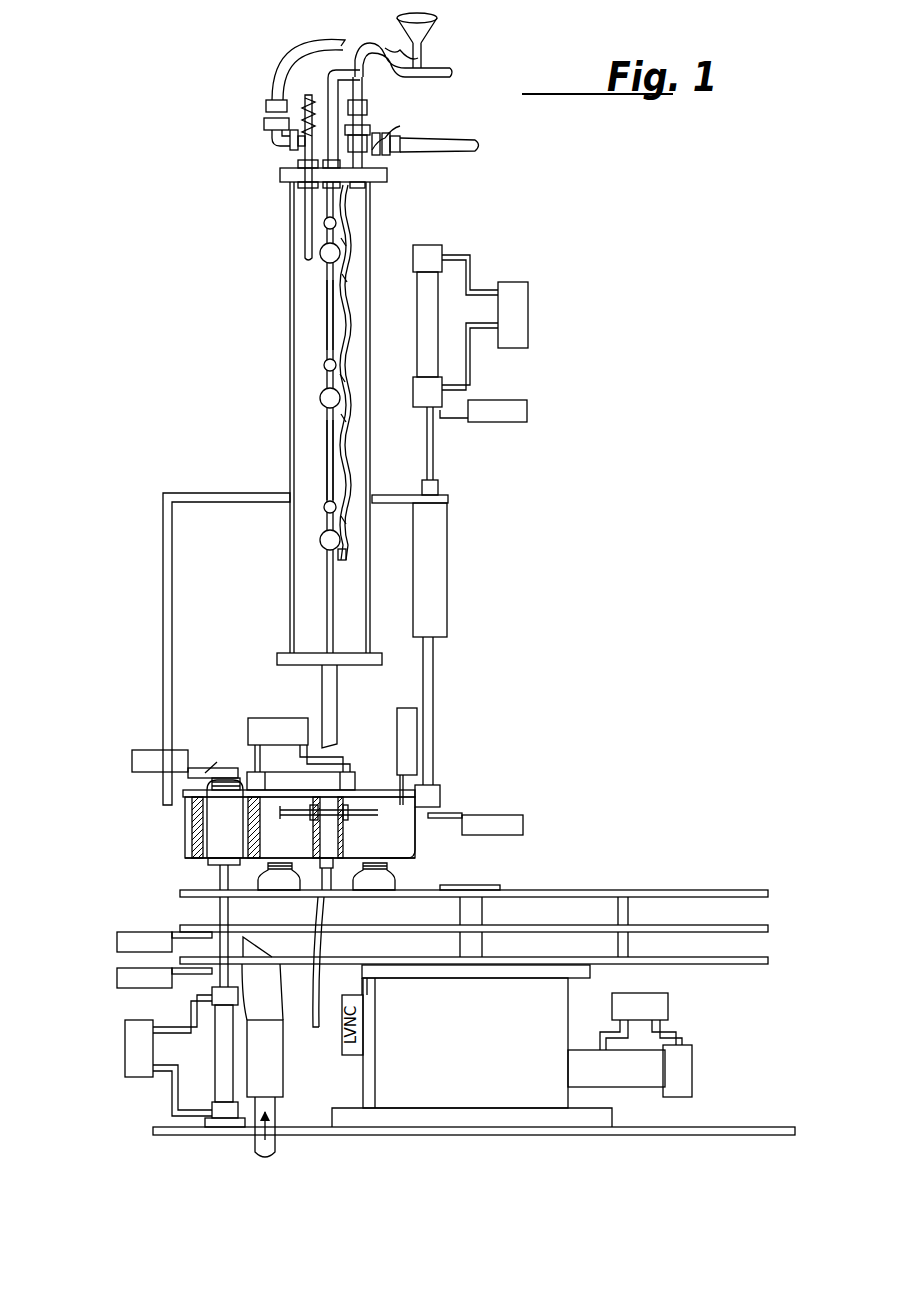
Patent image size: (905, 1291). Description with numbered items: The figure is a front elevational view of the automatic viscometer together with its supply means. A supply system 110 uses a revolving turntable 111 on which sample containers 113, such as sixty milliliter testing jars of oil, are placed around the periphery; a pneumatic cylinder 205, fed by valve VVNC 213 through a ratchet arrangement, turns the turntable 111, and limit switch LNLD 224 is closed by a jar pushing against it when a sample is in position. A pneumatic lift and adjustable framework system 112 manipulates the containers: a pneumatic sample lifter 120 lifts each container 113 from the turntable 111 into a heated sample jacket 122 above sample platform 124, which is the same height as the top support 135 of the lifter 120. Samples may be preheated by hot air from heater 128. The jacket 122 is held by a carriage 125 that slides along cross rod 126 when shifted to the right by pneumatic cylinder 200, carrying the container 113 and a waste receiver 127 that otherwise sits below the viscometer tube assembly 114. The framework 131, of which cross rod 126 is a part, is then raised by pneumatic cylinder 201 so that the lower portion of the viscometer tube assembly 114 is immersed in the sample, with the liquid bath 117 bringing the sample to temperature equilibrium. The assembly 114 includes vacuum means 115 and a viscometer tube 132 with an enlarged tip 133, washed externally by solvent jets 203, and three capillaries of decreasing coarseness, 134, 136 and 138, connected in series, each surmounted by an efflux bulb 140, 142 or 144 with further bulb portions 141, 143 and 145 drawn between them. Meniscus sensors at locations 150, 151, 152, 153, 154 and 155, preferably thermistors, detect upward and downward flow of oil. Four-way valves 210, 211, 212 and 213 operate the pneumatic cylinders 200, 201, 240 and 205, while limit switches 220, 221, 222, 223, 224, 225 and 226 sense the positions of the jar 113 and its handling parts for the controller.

The supply system 110 is at (471, 899).
The turntable 111 is at (655, 890).
The pneumatic lift and adjustable framework system 112 is at (435, 660).
The sample container 113 is at (218, 852).
The viscometer tube assembly 114 is at (280, 184).
The vacuum means 115 is at (455, 70).
The liquid bath means 117 is at (292, 352).
The pneumatic sample lifter 120 is at (442, 899).
The heated sample jacket 122 is at (198, 830).
The sample platform 124 is at (195, 812).
The carriage 125 is at (212, 805).
The cross rod 126 is at (375, 790).
The waste receiver 127 is at (417, 842).
The heater 128 is at (283, 1082).
The framework 131 is at (163, 578).
The viscometer tube 132 is at (318, 210).
The enlarged tip 133 is at (320, 692).
The lower capillary tube 134 is at (325, 607).
The top support 135 is at (240, 866).
The middle capillary tube 136 is at (325, 445).
The fine capillary tube 138 is at (330, 316).
The efflux bulb 140 is at (321, 542).
The lower small bulb 141 is at (325, 504).
The efflux bulb 142 is at (321, 399).
The middle small bulb 143 is at (324, 365).
The efflux bulb 144 is at (322, 258).
The upper small bulb 145 is at (324, 223).
The meniscus sensor location 150 is at (338, 556).
The meniscus sensor location 151 is at (340, 520).
The meniscus sensor location 152 is at (340, 418).
The meniscus sensor location 153 is at (338, 378).
The meniscus sensor location 154 is at (343, 278).
The meniscus sensor location 155 is at (340, 242).
The pneumatic cylinder 200 is at (352, 775).
The pneumatic cylinder 201 is at (417, 318).
The jets 203 is at (376, 812).
The pneumatic cylinder 205 is at (692, 1070).
The valve 210 is at (528, 300).
The valve 211 is at (248, 722).
The valve 212 is at (125, 1072).
The valve VVNC 213 is at (668, 1002).
The limit switch 220 is at (527, 410).
The limit switch 221 is at (512, 815).
The limit switch 222 is at (417, 722).
The limit switch 223 is at (132, 762).
The limit switch LNLD 224 is at (117, 946).
The limit switch 225 is at (117, 984).
The limit switch 226 is at (400, 1045).
The pneumatic cylinder 240 is at (222, 1035).